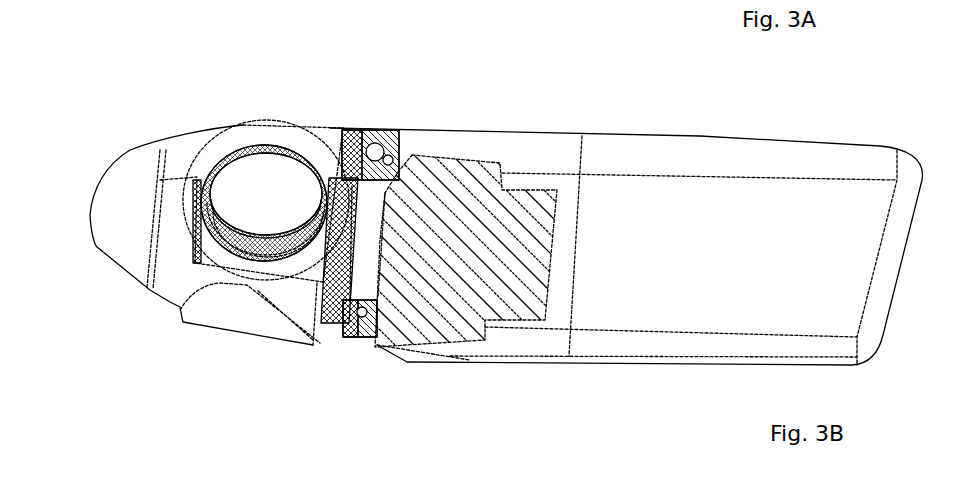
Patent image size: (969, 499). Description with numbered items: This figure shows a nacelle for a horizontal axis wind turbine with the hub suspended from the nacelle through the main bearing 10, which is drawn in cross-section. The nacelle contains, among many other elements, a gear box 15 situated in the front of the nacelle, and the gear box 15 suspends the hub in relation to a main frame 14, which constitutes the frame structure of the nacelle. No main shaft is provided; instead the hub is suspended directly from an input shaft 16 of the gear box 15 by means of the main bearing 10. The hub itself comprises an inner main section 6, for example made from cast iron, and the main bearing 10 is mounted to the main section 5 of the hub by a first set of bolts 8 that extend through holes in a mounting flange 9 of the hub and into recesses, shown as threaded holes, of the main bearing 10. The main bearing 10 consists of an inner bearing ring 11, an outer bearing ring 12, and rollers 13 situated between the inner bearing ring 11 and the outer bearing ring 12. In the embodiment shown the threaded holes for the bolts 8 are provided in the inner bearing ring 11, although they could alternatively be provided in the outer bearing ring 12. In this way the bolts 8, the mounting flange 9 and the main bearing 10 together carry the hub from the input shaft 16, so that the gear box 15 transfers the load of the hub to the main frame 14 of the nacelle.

The main section 5 is at (263, 150).
The inner main section 6 is at (182, 0).
The first set of bolts 8 is at (292, 0).
The mounting flange 9 is at (332, 297).
The main bearing 10 is at (400, 147).
The inner bearing ring 11 is at (377, 307).
The outer bearing ring 12 is at (347, 333).
The rollers 13 is at (363, 330).
The main frame 14 is at (365, 140).
The gear box 15 is at (540, 207).
The input shaft 16 is at (420, 213).